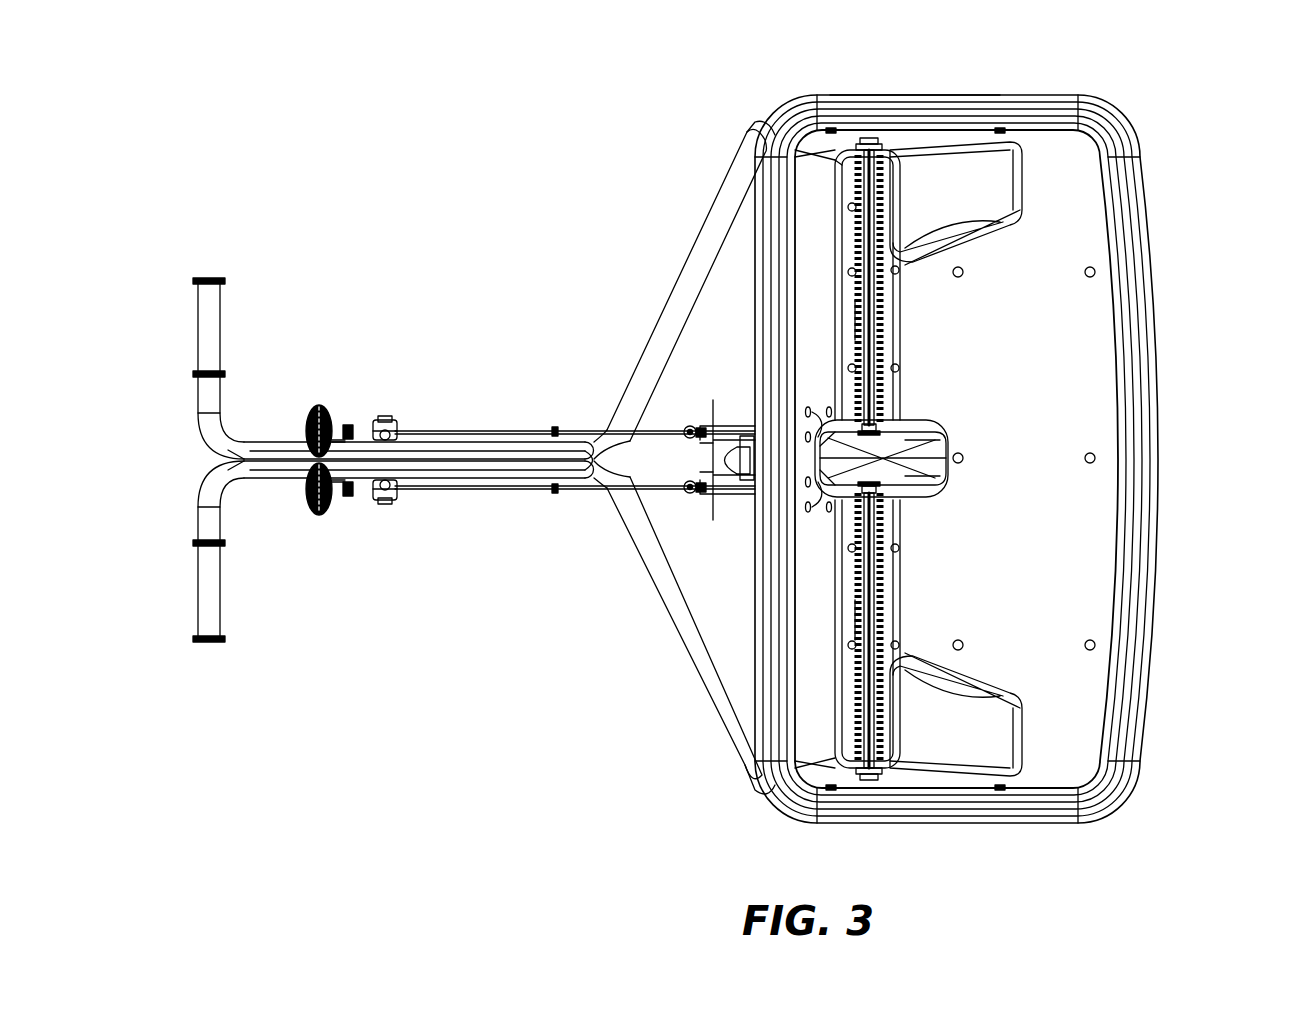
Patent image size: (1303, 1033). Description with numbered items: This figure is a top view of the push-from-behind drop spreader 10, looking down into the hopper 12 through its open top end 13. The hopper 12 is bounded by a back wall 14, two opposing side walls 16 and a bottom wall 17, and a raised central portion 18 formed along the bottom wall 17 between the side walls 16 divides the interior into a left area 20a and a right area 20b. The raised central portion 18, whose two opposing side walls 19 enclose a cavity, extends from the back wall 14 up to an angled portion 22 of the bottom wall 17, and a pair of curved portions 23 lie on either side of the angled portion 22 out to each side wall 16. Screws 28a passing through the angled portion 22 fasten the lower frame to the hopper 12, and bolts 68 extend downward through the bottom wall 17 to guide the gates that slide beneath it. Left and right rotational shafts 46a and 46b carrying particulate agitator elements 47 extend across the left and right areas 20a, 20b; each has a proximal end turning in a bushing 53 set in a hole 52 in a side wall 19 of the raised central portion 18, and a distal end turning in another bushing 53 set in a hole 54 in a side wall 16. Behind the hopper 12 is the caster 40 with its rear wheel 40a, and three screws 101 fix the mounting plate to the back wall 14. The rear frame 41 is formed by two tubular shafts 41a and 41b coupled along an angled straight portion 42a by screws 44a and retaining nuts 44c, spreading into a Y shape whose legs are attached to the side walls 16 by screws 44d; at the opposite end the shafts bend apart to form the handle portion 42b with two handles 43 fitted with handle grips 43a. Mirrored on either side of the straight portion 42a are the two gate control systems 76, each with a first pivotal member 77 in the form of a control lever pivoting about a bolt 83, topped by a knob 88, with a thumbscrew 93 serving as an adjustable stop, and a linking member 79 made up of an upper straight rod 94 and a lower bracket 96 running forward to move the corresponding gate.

The drop spreader 10 is at (1227, 66).
The hopper 12 is at (1122, 122).
The open top end 13 is at (968, 96).
The back wall 14 is at (756, 688).
The side walls 16 is at (937, 135).
The bottom wall 17 is at (870, 580).
The raised central portion 18 is at (948, 437).
The side walls of raised central portion 19 is at (946, 480).
The left area 20a is at (903, 573).
The right area 20b is at (903, 342).
The angled portion 22 is at (1100, 350).
The curved portions 23 is at (1005, 177).
The screws 28a is at (1085, 272).
The caster 40 is at (716, 430).
The rear wheel 40a is at (716, 490).
The rear frame 41 is at (443, 480).
The tubular shaft 41a is at (492, 480).
The tubular shaft 41b is at (492, 440).
The angled straight portion 42a is at (443, 440).
The handle portion 42b is at (238, 428).
The handles 43 is at (222, 322).
The handle grips 43a is at (197, 322).
The screws 44a is at (560, 490).
The retaining nuts 44c is at (560, 430).
The screws 44d is at (830, 128).
The left rotational shaft 46a is at (885, 597).
The right rotational shaft 46b is at (885, 323).
The particulate agitator elements 47 is at (855, 318).
The hole 52 is at (878, 431).
The bushing 53 is at (884, 148).
The hole 54 is at (870, 138).
The bolts 68 is at (848, 207).
The gate control system 76 is at (336, 412).
The first pivotal member 77 is at (305, 428).
The linking member 79 is at (668, 408).
The bolt 83 is at (349, 425).
The knob 88 is at (320, 407).
The thumbscrew 93 is at (388, 420).
The upper straight rod 94 is at (614, 459).
The lower bracket 96 is at (650, 460).
The screws 101 is at (810, 408).